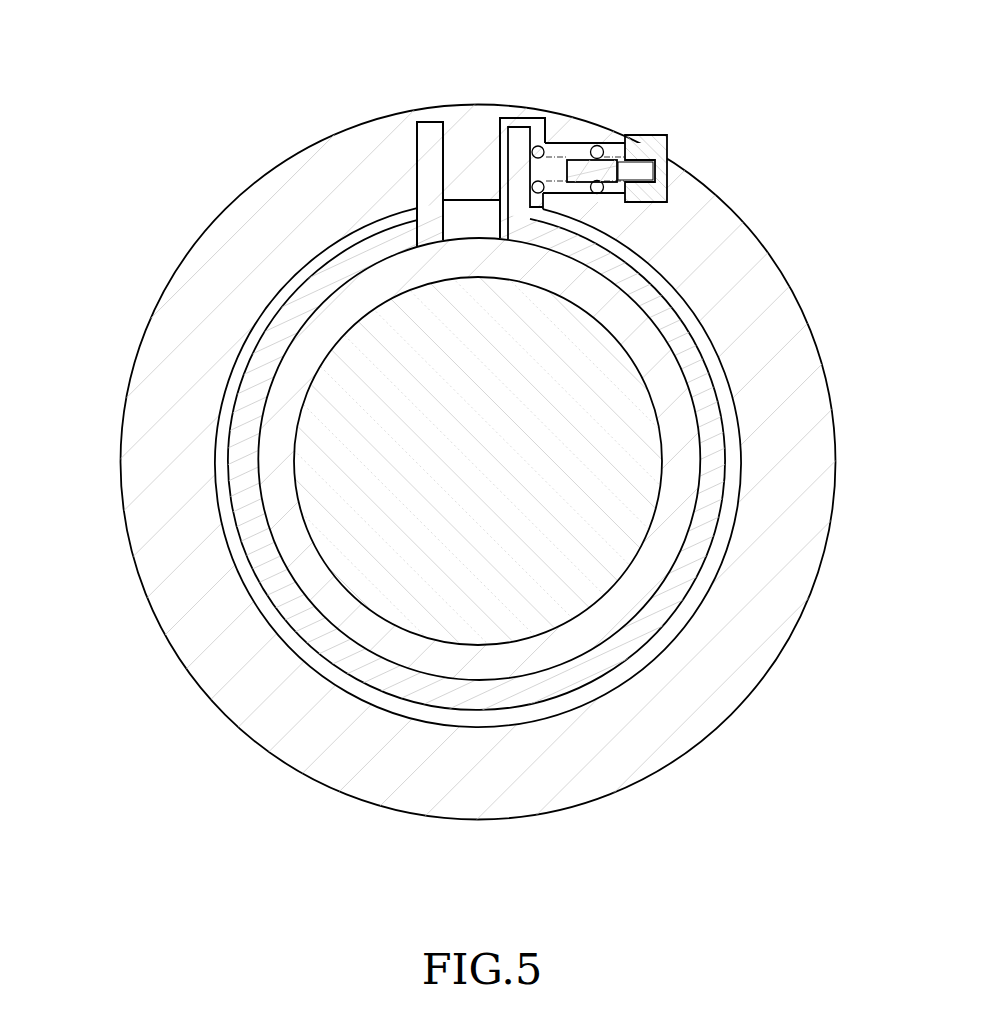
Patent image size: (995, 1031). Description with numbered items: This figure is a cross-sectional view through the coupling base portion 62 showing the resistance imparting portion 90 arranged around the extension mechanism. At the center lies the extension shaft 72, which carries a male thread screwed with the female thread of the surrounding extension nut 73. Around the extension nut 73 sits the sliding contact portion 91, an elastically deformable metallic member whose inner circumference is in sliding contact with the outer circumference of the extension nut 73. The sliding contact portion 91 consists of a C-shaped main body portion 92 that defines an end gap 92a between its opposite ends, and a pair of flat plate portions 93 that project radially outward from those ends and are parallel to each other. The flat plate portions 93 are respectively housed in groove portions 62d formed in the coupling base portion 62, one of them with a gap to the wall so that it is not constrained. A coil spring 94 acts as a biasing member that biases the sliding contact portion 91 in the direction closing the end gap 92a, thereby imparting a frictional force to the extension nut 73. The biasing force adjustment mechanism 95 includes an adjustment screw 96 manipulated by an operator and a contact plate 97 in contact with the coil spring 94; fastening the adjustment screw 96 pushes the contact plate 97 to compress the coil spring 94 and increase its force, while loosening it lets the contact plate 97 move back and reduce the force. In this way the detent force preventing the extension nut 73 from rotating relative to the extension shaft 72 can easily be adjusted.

The coupling base portion 62 is at (530, 760).
The groove portions 62d is at (510, 166).
The extension shaft 72 is at (459, 555).
The extension nut 73 is at (405, 650).
The resistance imparting portion 90 is at (614, 222).
The sliding contact portion 91 is at (261, 336).
The main body portion 92 is at (242, 399).
The end gap 92a is at (459, 222).
The flat plate portions 93 is at (520, 145).
The coil spring 94 is at (539, 146).
The biasing force adjustment mechanism 95 is at (668, 123).
The adjustment screw 96 is at (636, 172).
The contact plate 97 is at (609, 160).